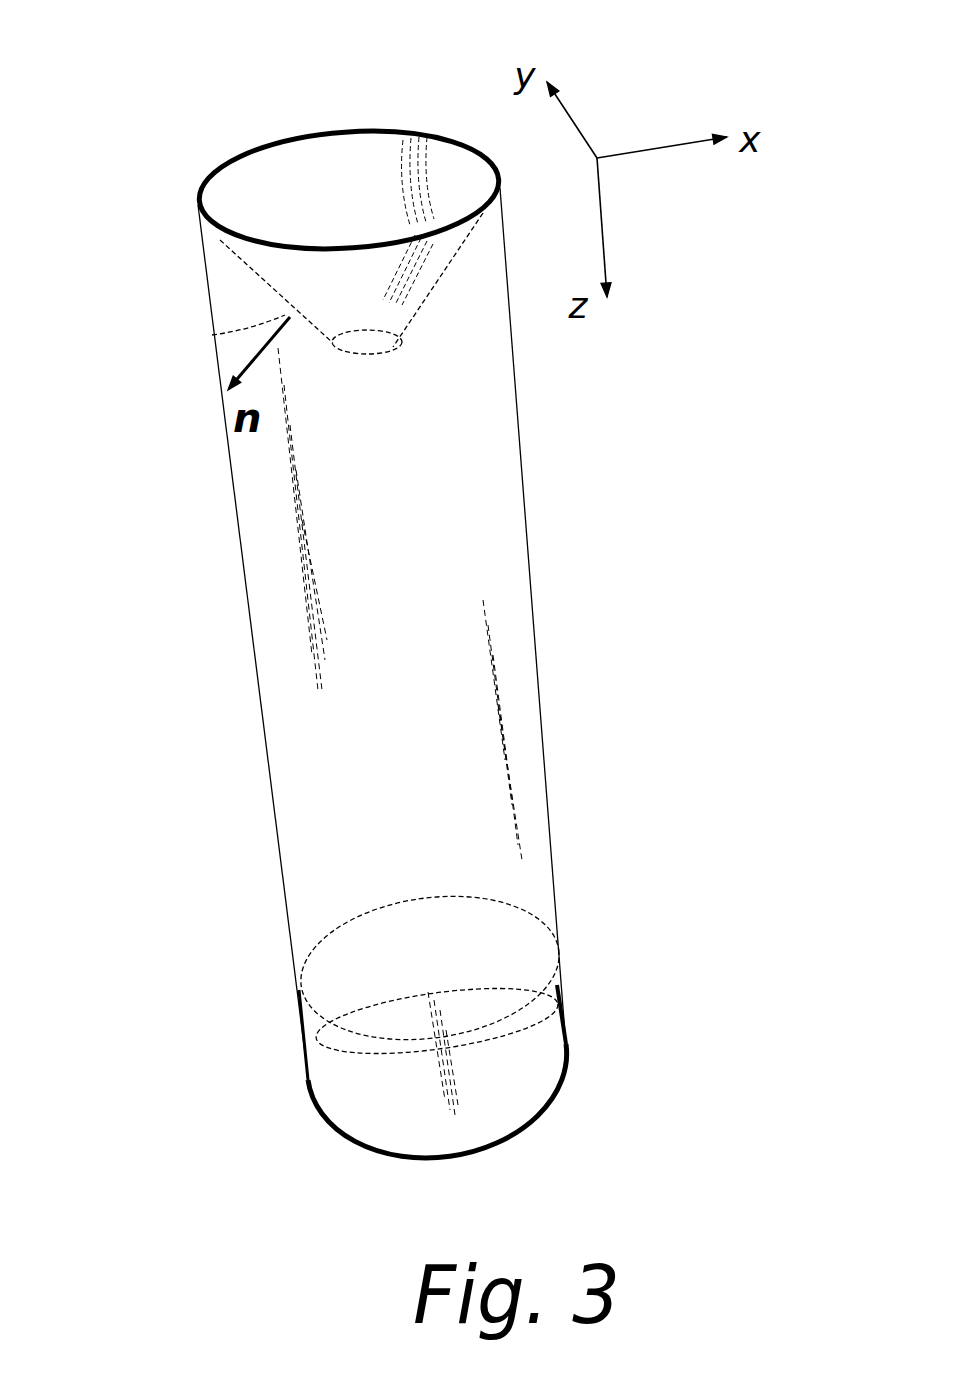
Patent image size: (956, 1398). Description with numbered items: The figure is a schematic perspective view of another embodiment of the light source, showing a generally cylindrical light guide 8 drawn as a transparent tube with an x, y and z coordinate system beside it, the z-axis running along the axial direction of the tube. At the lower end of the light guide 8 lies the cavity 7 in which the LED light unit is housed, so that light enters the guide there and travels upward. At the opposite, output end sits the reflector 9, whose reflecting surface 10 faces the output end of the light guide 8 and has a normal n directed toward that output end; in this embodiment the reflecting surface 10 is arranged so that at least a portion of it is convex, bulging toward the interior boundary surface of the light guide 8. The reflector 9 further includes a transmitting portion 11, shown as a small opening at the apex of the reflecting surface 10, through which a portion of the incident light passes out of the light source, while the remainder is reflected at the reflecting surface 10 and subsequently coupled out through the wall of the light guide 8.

The cavity 7 is at (520, 1067).
The light guide 8 is at (567, 410).
The reflector 9 is at (363, 177).
The reflecting surface 10 is at (277, 313).
The transmitting portion 11 is at (393, 346).